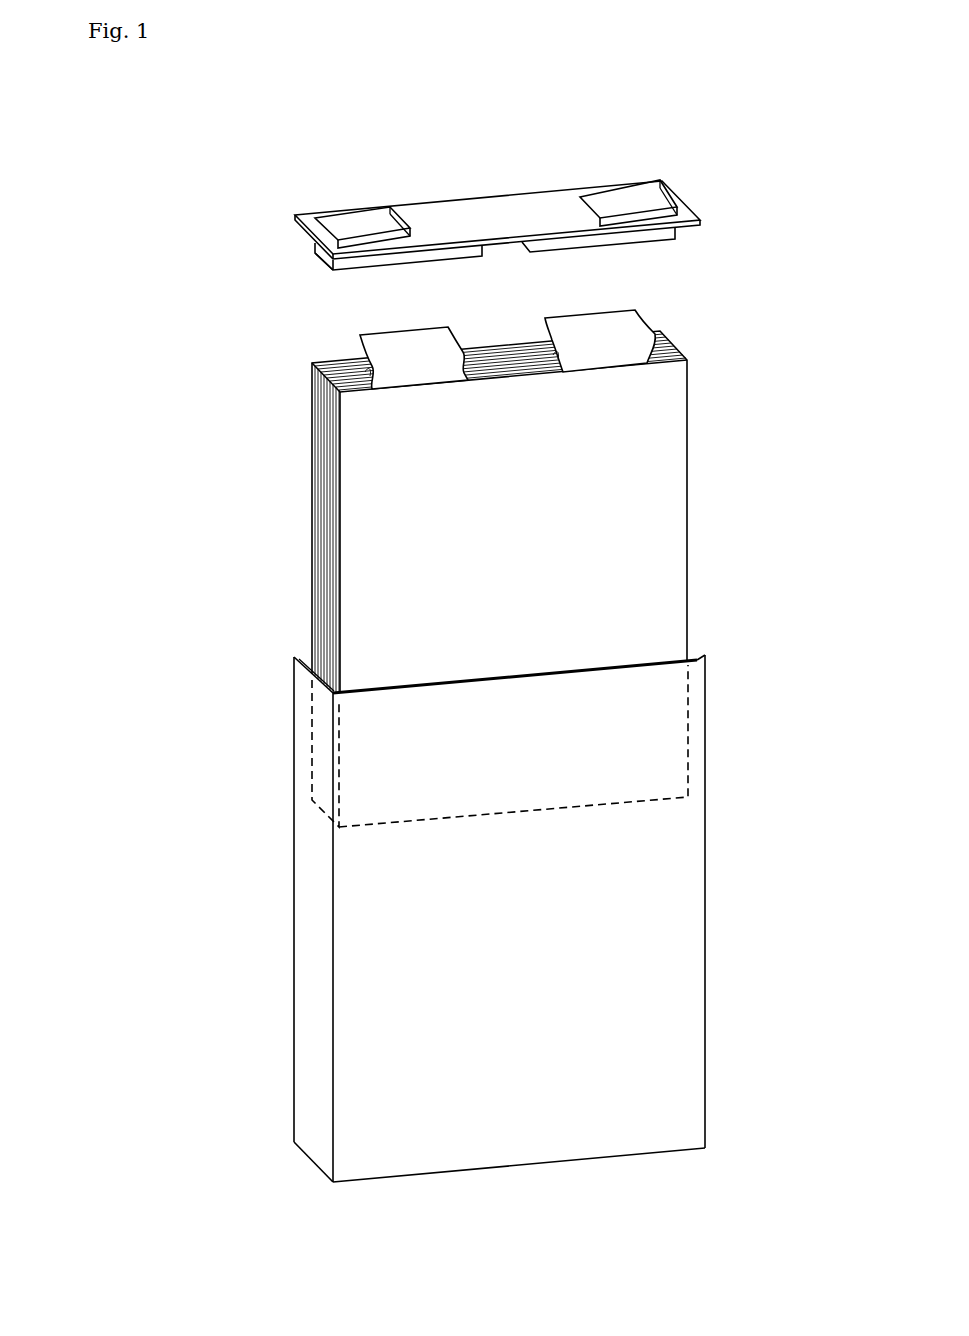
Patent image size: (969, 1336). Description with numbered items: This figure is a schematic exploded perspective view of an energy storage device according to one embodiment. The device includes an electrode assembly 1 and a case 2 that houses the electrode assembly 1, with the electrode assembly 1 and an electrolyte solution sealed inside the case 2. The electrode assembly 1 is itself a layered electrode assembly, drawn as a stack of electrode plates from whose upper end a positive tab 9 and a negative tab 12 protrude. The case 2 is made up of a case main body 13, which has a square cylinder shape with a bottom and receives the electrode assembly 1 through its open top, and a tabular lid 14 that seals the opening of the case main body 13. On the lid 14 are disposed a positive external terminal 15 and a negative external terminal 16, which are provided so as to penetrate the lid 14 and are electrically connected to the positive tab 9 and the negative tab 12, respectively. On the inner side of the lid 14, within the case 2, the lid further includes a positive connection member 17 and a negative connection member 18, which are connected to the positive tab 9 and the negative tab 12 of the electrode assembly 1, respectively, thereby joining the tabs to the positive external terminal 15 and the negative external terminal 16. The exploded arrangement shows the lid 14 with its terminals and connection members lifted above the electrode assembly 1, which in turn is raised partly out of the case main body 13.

The electrode assembly 1 is at (563, 512).
The case 2 is at (550, 918).
The positive tab 9 is at (621, 322).
The negative tab 12 is at (380, 342).
The case main body 13 is at (640, 1062).
The lid 14 is at (502, 217).
The positive external terminal 15 is at (625, 197).
The negative external terminal 16 is at (362, 223).
The positive connection member 17 is at (642, 244).
The negative connection member 18 is at (373, 265).